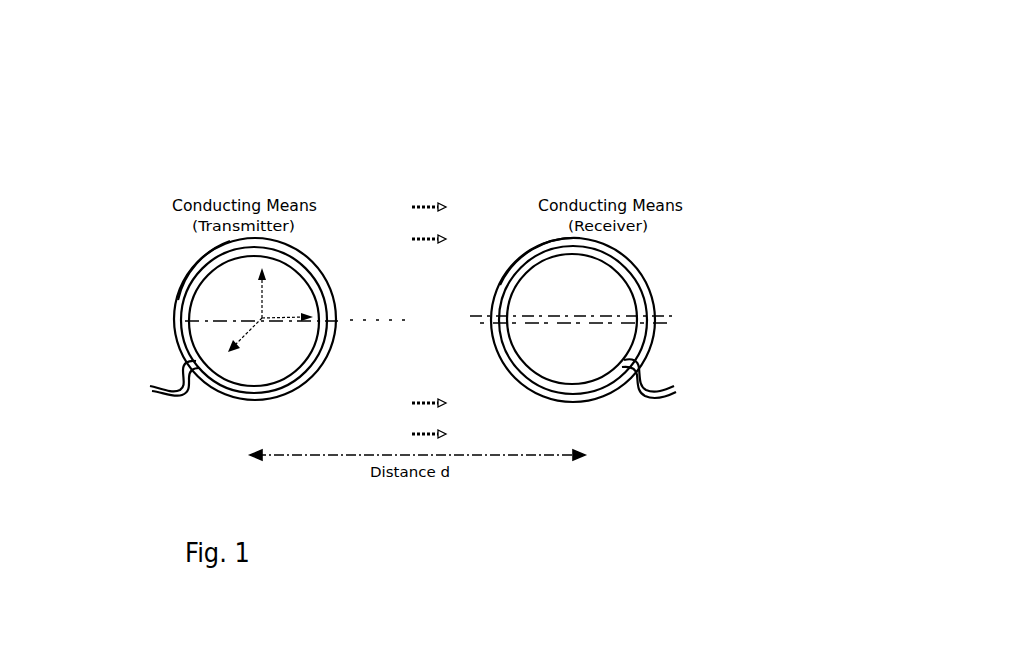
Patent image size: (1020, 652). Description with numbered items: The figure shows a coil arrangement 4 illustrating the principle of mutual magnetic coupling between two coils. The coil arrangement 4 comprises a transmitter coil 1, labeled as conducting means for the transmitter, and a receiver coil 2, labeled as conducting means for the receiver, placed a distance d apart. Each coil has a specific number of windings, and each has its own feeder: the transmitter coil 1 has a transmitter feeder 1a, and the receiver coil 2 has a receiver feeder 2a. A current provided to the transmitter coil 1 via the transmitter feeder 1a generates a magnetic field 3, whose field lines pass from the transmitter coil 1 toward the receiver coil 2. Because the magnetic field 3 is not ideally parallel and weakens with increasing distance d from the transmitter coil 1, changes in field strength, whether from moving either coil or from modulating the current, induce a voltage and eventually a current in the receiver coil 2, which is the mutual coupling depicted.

The transmitter coil 1 is at (180, 291).
The transmitter feeder 1a is at (160, 384).
The receiver coil 2 is at (639, 272).
The receiver feeder 2a is at (652, 380).
The magnetic field 3 is at (348, 430).
The coil arrangement 4 is at (540, 117).